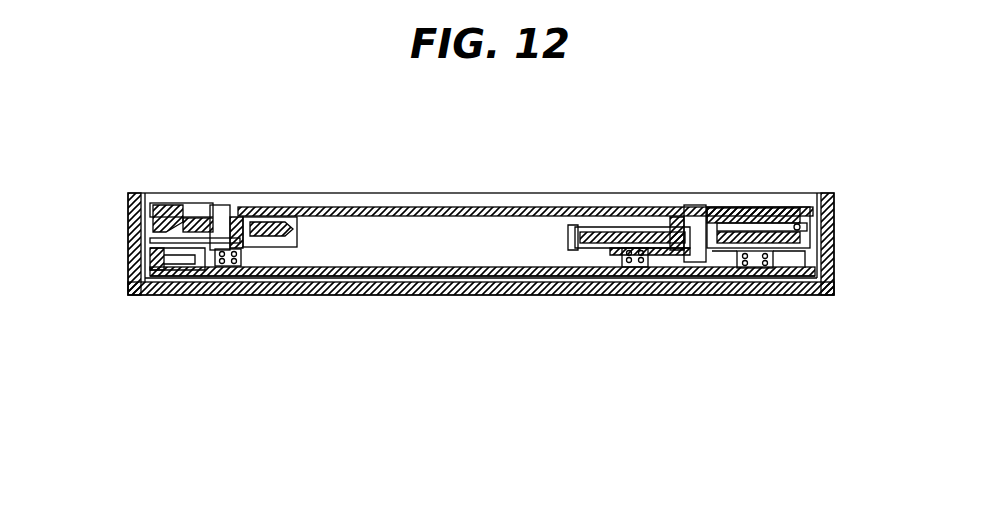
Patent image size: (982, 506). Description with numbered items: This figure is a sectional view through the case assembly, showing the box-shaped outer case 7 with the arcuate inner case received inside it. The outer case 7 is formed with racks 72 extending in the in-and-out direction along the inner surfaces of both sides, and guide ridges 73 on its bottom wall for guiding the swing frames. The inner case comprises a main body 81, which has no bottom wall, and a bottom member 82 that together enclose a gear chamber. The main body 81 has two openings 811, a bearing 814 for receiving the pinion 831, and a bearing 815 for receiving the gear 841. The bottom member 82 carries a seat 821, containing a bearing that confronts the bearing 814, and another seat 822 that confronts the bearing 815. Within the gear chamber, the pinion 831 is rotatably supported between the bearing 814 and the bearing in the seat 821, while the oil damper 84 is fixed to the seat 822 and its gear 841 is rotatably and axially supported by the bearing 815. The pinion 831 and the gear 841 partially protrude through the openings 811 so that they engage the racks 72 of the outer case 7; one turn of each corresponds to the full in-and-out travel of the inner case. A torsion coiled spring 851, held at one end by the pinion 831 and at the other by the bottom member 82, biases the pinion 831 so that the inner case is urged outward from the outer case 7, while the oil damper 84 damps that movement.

The outer case 7 is at (510, 293).
The racks 72 is at (134, 262).
The guide ridges 73 is at (458, 293).
The main body 81 is at (412, 212).
The bottom member 82 is at (388, 292).
The openings 811 is at (188, 216).
The bearing 814 is at (236, 212).
The bearing 815 is at (690, 215).
The seat 821 is at (634, 292).
The seat 822 is at (232, 292).
The pinion 831 is at (612, 230).
The gear 841 is at (278, 226).
The oil damper 84 is at (193, 292).
The torsion coiled spring 851 is at (737, 293).